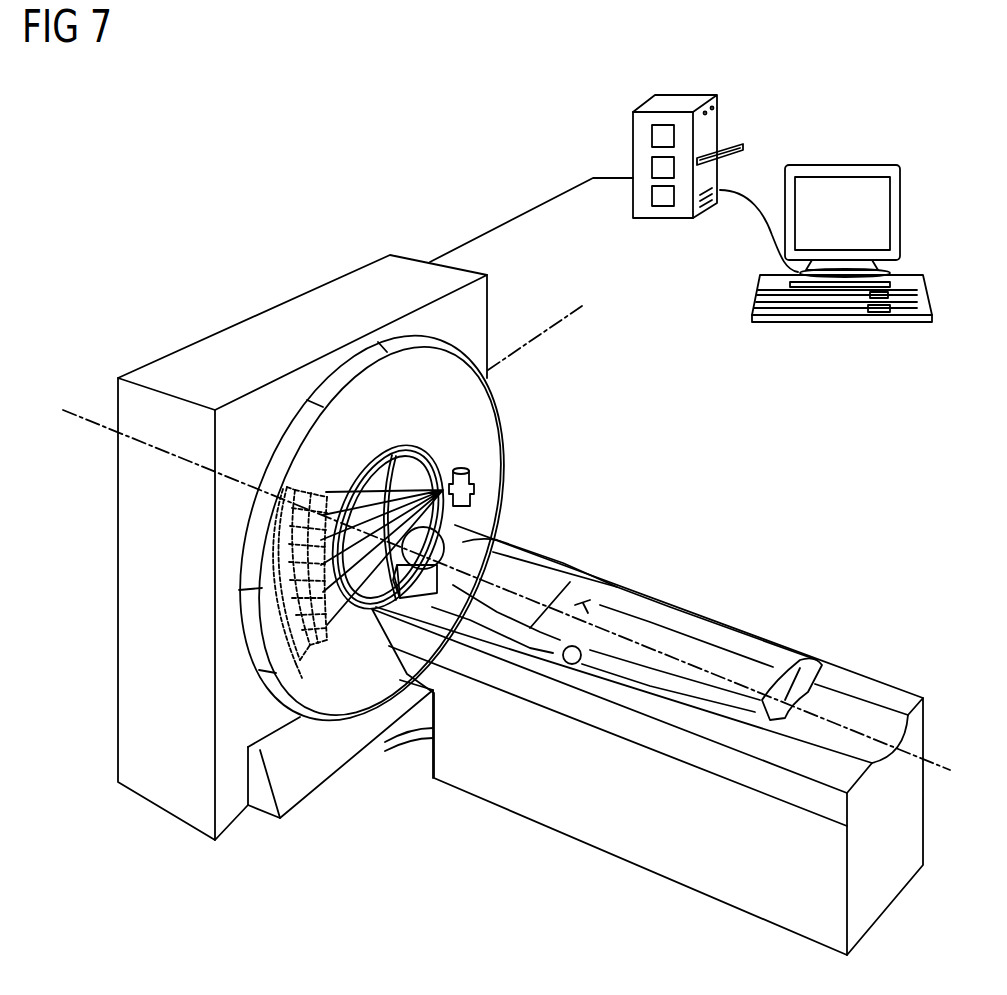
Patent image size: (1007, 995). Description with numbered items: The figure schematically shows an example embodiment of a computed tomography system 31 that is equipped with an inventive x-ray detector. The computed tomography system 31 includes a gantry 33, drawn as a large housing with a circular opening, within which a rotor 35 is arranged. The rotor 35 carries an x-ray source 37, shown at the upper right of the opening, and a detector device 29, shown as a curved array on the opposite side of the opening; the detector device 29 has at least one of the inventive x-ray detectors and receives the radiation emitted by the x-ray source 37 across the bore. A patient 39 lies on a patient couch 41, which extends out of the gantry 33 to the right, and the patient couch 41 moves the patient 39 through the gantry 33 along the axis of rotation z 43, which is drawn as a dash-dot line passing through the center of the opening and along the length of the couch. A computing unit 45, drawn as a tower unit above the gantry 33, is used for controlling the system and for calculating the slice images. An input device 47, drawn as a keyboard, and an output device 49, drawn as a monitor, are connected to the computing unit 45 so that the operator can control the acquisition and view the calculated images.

The detector device 29 is at (310, 658).
The computed tomography system 31 is at (112, 670).
The gantry 33 is at (236, 292).
The rotor 35 is at (483, 413).
The x-ray source 37 is at (470, 487).
The patient 39 is at (527, 572).
The patient couch 41 is at (563, 818).
The axis of rotation z 43 is at (92, 423).
The computing unit 45 is at (677, 104).
The input device 47 is at (837, 322).
The output device 49 is at (840, 166).